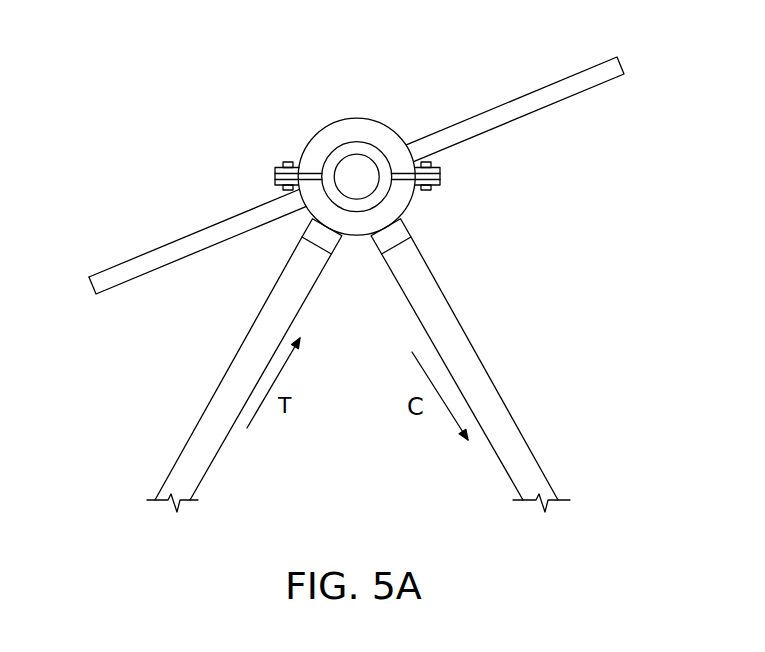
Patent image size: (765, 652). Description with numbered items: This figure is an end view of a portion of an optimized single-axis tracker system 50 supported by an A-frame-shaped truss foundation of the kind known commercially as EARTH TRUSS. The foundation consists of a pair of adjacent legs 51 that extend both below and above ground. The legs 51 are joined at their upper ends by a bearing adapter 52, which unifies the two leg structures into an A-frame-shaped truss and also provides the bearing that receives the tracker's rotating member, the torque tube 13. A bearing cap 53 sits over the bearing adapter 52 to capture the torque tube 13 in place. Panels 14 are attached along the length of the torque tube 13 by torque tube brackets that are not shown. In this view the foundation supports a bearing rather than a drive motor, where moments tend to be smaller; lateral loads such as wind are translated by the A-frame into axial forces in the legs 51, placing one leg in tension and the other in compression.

The single-axis tracker system 50 is at (167, 60).
The torque tube 13 is at (357, 175).
The panels 14 is at (510, 100).
The legs 51 is at (228, 372).
The bearing adapter 52 is at (410, 227).
The bearing cap 53 is at (356, 118).